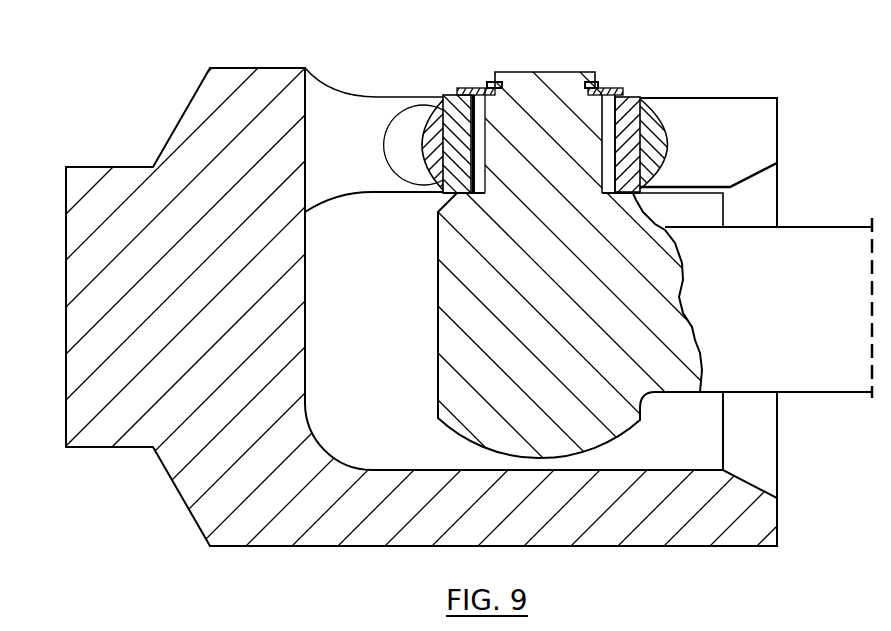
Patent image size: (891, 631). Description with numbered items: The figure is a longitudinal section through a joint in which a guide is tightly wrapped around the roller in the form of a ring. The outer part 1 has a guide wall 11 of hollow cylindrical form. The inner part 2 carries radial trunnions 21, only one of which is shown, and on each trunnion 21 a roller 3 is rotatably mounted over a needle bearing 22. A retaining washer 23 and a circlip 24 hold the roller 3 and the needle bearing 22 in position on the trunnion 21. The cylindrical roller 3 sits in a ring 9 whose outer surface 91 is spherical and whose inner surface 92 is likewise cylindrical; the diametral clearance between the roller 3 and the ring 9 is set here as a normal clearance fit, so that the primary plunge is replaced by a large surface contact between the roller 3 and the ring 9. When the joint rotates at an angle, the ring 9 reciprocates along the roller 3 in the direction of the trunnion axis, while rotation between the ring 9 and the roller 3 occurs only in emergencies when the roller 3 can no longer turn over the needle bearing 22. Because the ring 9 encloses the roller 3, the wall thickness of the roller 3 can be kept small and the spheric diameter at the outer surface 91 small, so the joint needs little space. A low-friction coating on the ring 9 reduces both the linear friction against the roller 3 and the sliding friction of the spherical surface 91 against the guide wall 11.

The outer part 1 is at (275, 75).
The inner part 2 is at (670, 282).
The roller 3 is at (443, 100).
The ring 9 is at (420, 140).
The guide wall 11 is at (740, 134).
The radial trunnion 21 is at (532, 153).
The needle bearing 22 is at (636, 125).
The retaining washer 23 is at (608, 123).
The circlip 24 is at (593, 80).
The outer surface 91 is at (668, 137).
The inner surface 92 is at (643, 108).